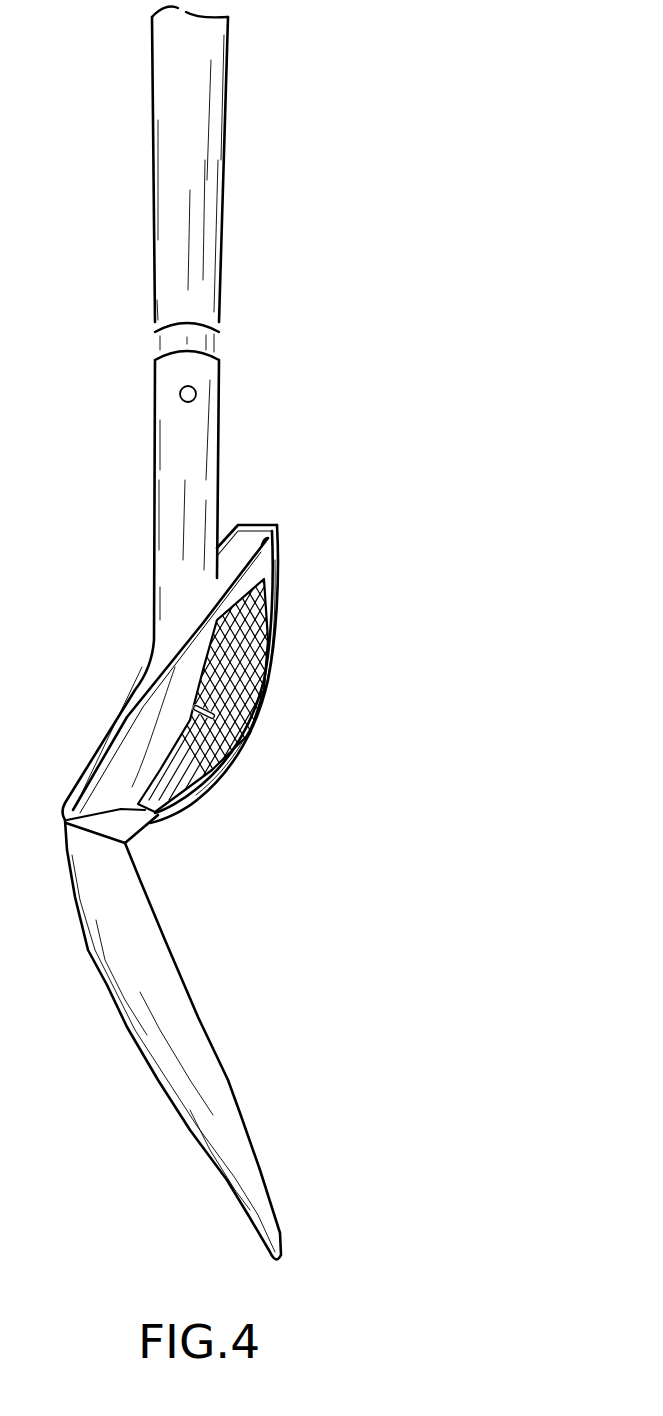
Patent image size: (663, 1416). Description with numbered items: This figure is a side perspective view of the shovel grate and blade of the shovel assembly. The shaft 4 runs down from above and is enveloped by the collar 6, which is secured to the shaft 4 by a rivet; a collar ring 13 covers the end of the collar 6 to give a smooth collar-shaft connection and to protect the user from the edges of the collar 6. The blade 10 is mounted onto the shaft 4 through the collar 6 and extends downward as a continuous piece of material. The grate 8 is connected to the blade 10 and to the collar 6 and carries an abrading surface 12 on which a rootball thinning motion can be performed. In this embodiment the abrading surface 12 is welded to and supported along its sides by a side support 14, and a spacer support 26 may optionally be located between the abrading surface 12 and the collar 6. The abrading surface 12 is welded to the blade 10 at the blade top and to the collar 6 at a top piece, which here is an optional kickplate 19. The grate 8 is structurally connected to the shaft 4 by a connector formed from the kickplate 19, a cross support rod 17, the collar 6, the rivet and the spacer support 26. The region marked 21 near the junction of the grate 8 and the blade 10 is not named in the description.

The shaft 4 is at (155, 93).
The collar ring 13 is at (220, 347).
The collar 6 is at (157, 445).
The kickplate 19 is at (277, 529).
The side support 14 is at (235, 747).
The cross support rod 17 is at (104, 741).
The abrading surface 12 is at (233, 665).
The spacer support 26 is at (210, 703).
The lip / lower ledge 21 is at (150, 824).
The grate 8 is at (244, 689).
The blade 10 is at (244, 1127).